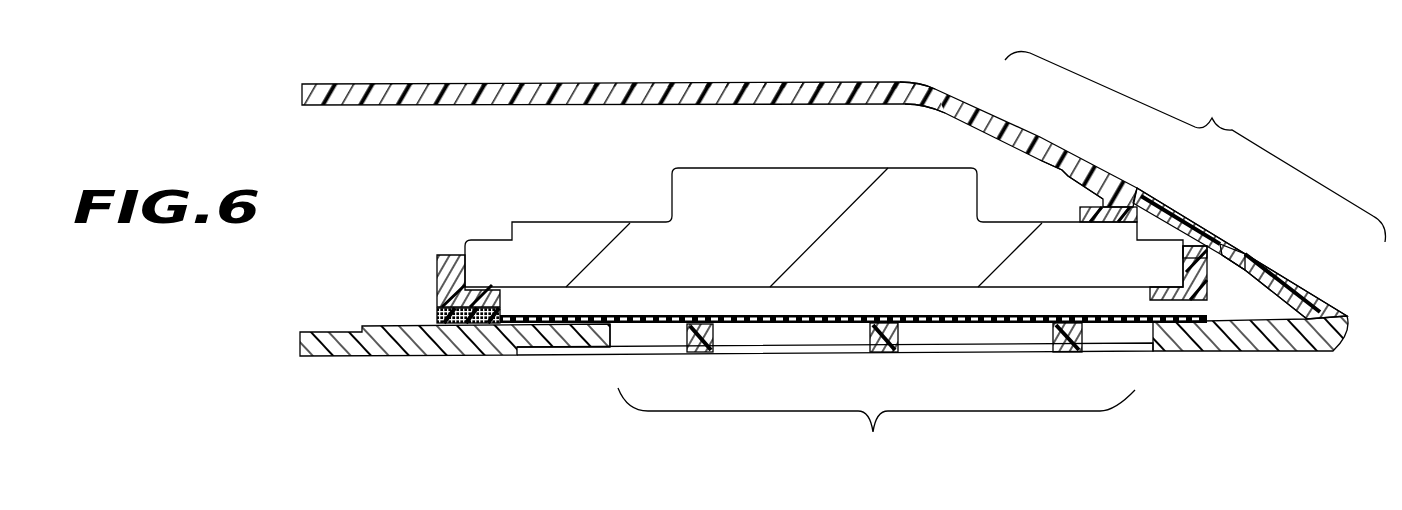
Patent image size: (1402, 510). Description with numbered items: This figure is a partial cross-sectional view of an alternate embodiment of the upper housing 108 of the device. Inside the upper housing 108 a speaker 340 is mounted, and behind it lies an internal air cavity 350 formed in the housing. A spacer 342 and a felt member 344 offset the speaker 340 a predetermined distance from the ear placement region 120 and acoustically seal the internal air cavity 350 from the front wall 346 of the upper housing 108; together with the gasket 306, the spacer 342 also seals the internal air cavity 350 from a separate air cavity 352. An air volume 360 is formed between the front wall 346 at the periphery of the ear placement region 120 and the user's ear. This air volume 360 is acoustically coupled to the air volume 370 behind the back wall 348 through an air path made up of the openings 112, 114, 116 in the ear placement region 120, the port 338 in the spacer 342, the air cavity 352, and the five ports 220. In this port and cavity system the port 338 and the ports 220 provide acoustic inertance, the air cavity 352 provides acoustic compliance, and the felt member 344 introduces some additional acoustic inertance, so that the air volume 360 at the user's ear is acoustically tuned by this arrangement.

The upper housing 108 is at (1092, 160).
The openings 112 is at (803, 337).
The openings 114 is at (977, 337).
The openings 116 is at (1108, 335).
The ear placement region 120 is at (578, 355).
The ports 220 is at (1233, 252).
The gasket 306 is at (1200, 256).
The port 338 is at (1187, 317).
The speaker 340 is at (793, 173).
The spacer 342 is at (450, 267).
The felt member 344 is at (487, 323).
The front wall 346 is at (388, 357).
The back wall 348 is at (1033, 140).
The internal air cavity 350 is at (889, 118).
The air cavity 352 is at (1282, 308).
The air volume 360 is at (876, 428).
The air volume 370 is at (1195, 147).